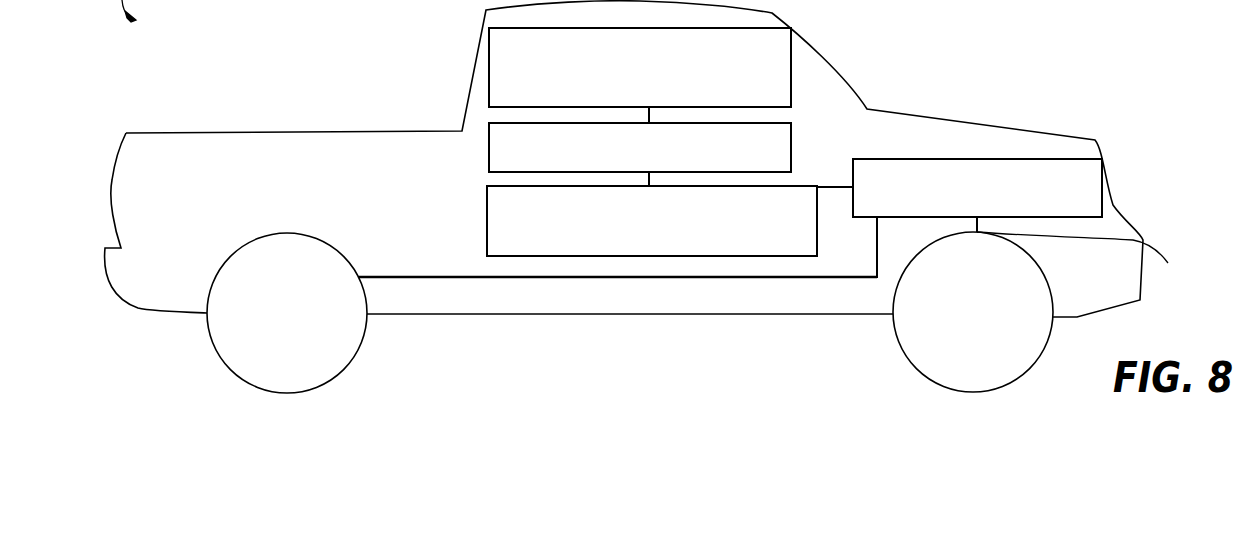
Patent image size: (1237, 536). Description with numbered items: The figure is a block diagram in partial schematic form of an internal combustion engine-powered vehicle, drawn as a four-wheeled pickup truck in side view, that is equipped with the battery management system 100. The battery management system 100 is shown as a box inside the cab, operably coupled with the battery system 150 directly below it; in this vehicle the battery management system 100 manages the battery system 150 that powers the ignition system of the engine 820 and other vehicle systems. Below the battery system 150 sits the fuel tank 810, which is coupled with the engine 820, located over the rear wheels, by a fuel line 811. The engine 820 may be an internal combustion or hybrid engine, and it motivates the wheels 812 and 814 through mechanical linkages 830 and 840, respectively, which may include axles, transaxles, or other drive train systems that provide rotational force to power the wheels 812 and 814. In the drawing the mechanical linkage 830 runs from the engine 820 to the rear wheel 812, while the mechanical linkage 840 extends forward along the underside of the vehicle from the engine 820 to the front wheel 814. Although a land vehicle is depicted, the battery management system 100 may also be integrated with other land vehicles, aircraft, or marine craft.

The battery management system 100 is at (640, 67).
The battery system 150 is at (640, 147).
The fuel tank 810 is at (652, 221).
The fuel line 811 is at (845, 187).
The wheels 812 is at (897, 333).
The wheels 814 is at (363, 337).
The engine 820 is at (977, 188).
The mechanical linkage 830 is at (1092, 254).
The mechanical linkage 840 is at (703, 277).